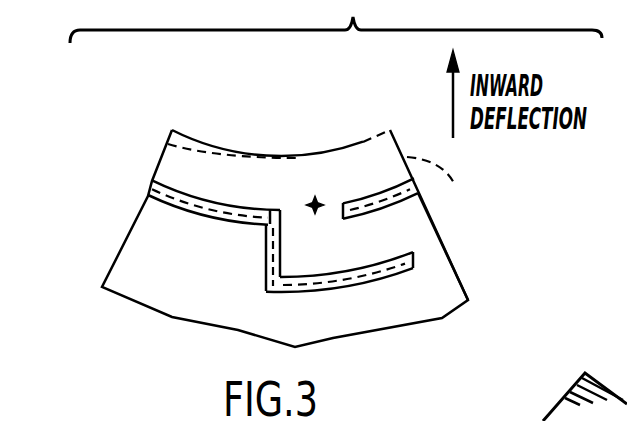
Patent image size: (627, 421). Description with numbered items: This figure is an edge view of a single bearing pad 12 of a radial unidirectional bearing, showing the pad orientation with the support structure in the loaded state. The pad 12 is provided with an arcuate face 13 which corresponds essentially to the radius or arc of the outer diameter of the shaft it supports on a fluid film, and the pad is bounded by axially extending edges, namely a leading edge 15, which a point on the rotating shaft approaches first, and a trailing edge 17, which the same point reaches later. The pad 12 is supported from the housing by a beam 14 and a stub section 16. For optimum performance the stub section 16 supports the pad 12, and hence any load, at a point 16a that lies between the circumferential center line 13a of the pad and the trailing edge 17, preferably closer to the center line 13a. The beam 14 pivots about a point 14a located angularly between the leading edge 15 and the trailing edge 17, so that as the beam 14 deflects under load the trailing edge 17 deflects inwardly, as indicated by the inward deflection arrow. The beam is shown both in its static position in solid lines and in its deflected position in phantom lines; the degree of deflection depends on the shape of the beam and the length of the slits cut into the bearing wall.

The bearing pad 12 is at (350, 172).
The arcuate face 13 is at (313, 153).
The circumferential center line 13a is at (449, 182).
The beam 14 is at (353, 250).
The pivot point 14a is at (417, 227).
The leading edge 15 is at (162, 160).
The stub section 16 is at (300, 236).
The support point 16a is at (310, 203).
The trailing edge 17 is at (392, 127).